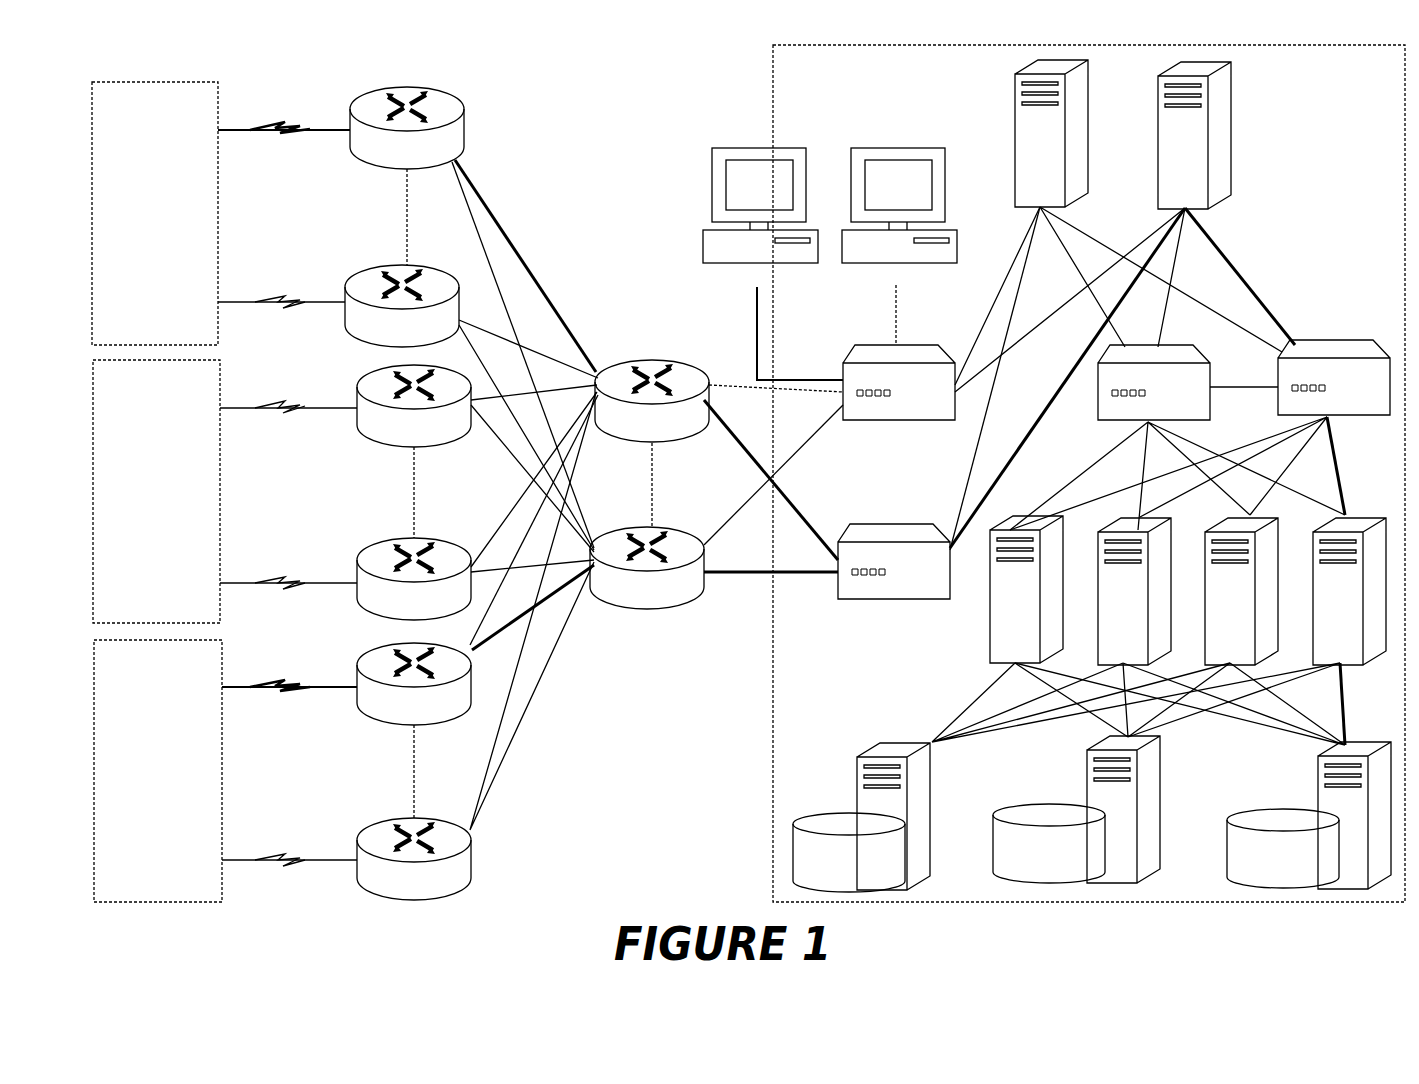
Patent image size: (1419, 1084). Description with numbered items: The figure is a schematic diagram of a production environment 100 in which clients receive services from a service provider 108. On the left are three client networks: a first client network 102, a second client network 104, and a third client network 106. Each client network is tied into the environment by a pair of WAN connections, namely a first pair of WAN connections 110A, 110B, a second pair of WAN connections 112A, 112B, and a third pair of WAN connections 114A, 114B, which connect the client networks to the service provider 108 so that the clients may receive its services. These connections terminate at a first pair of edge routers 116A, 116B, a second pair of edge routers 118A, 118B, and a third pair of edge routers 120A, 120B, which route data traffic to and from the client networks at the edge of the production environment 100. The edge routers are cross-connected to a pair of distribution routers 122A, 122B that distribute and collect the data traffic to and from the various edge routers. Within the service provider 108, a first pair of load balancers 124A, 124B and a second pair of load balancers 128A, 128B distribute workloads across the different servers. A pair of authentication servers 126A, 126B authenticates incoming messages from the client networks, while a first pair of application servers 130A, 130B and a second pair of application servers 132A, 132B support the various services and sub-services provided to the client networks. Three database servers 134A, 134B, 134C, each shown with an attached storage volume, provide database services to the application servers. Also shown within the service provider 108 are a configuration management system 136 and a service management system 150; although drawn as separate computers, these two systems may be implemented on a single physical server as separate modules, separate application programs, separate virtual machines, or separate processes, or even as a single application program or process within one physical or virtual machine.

The production environment 100 is at (666, 120).
The first client network 102 is at (155, 213).
The second client network 104 is at (156, 491).
The third client network 106 is at (158, 771).
The service provider 108 is at (772, 751).
The WAN connection 110A is at (280, 144).
The WAN connection 110B is at (283, 292).
The WAN connection 112A is at (285, 424).
The WAN connection 112B is at (283, 574).
The WAN connection 114A is at (287, 700).
The WAN connection 114B is at (283, 856).
The edge router 116A is at (466, 132).
The edge router 116B is at (390, 266).
The edge router 118A is at (388, 451).
The edge router 118B is at (441, 540).
The edge router 120A is at (406, 732).
The edge router 120B is at (478, 858).
The distribution router 122A is at (647, 361).
The distribution router 122B is at (646, 618).
The load balancer 124A is at (862, 343).
The load balancer 124B is at (863, 522).
The authentication server 126A is at (1014, 101).
The authentication server 126B is at (1236, 134).
The load balancer 128A is at (1210, 380).
The load balancer 128B is at (1347, 340).
The application server 130A is at (1024, 589).
The application server 130B is at (1132, 591).
The application server 132A is at (1239, 591).
The application server 132B is at (1348, 591).
The database server 134A is at (893, 753).
The database server 134B is at (1086, 782).
The database server 134C is at (1317, 785).
The configuration management system 136 is at (868, 147).
The service management system 150 is at (745, 148).